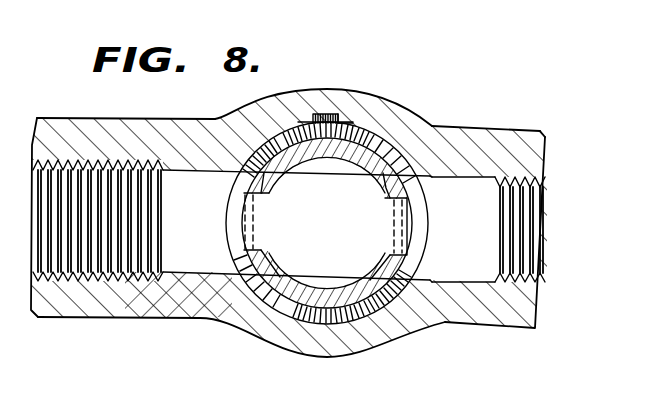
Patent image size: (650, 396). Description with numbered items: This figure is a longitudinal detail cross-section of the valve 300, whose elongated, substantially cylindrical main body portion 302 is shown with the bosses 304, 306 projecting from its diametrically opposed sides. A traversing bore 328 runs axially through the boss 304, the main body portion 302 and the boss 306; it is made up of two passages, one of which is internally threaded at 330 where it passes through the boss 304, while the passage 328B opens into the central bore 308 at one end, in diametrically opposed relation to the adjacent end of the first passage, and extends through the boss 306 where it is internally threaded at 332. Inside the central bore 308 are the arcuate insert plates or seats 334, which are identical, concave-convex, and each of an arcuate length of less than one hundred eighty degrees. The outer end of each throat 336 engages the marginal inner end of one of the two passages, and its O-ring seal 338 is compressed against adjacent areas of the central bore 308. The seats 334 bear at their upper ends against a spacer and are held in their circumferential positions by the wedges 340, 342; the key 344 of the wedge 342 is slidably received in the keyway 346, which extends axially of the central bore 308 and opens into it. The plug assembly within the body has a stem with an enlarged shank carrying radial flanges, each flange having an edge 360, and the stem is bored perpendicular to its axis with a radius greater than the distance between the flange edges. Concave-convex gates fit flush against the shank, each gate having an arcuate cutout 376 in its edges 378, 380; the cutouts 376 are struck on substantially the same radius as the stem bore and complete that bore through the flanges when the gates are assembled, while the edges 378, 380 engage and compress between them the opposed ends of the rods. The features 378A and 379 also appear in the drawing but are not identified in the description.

The valve 300 is at (223, 107).
The main body portion 302 is at (352, 360).
The boss 304 is at (137, 120).
The boss 306 is at (523, 131).
The central bore 308 is at (394, 322).
The traversing bore 328 is at (190, 197).
The passage 328B is at (466, 283).
The internal threads 330 is at (45, 306).
The internal threads 332 is at (540, 300).
The arcuate insert plate or seat 334 is at (392, 122).
The throat 336 is at (440, 176).
The O-ring seal 338 is at (262, 138).
The wedge 340 is at (319, 331).
The wedge 342 is at (304, 114).
The key 344 is at (323, 113).
The keyway 346 is at (337, 117).
The flange edge 360 is at (393, 238).
The arcuate cutout 376 is at (268, 270).
The gate edge 378 is at (262, 245).
The internal threads 378A is at (146, 318).
The groove 379 is at (263, 187).
The gate edge 380 is at (438, 236).